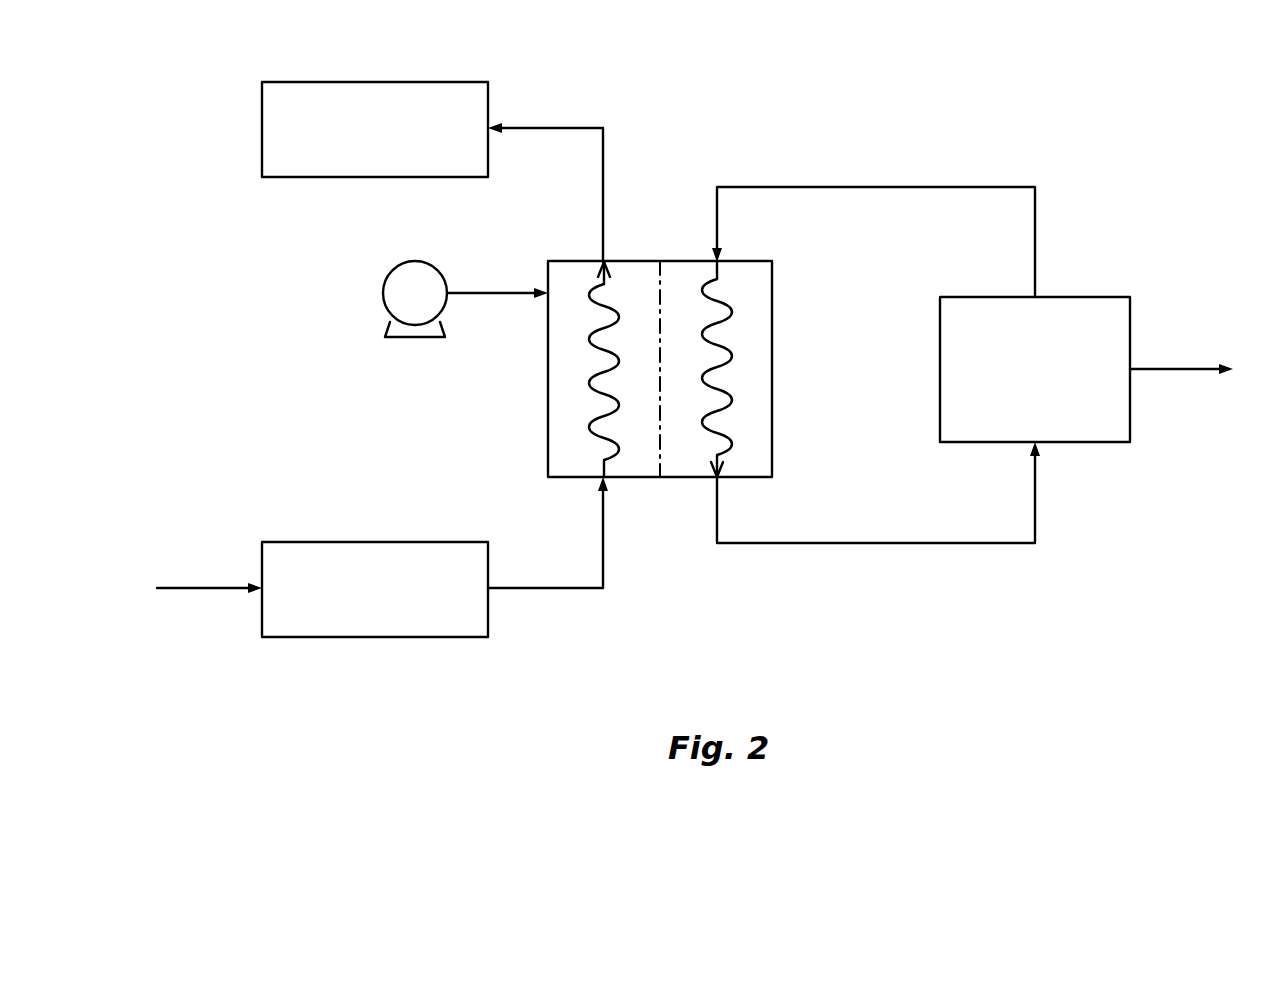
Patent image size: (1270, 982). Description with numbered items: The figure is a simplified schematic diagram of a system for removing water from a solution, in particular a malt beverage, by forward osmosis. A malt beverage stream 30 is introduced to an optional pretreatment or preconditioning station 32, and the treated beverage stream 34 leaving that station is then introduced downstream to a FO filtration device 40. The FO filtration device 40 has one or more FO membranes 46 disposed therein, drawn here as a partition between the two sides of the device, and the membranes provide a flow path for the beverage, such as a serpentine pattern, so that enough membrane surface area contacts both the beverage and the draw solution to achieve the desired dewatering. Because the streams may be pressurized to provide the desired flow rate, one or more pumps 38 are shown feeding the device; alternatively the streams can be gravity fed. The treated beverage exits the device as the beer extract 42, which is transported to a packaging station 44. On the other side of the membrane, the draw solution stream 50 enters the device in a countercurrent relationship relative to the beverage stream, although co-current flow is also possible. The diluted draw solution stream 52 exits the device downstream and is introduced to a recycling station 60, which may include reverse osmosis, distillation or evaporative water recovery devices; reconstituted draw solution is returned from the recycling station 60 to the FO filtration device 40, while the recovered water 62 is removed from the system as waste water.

The malt beverage stream 30 is at (212, 587).
The pretreatment or preconditioning station 32 is at (373, 542).
The treated beverage stream 34 is at (553, 589).
The pump 38 is at (392, 271).
The FO filtration device 40 is at (547, 373).
The beer extract 42 is at (568, 128).
The packaging station 44 is at (377, 82).
The FO membrane 46 is at (660, 312).
The draw solution stream 50 is at (892, 187).
The diluted draw solution stream 52 is at (848, 544).
The recycling station 60 is at (1082, 297).
The recovered water 62 is at (1190, 369).